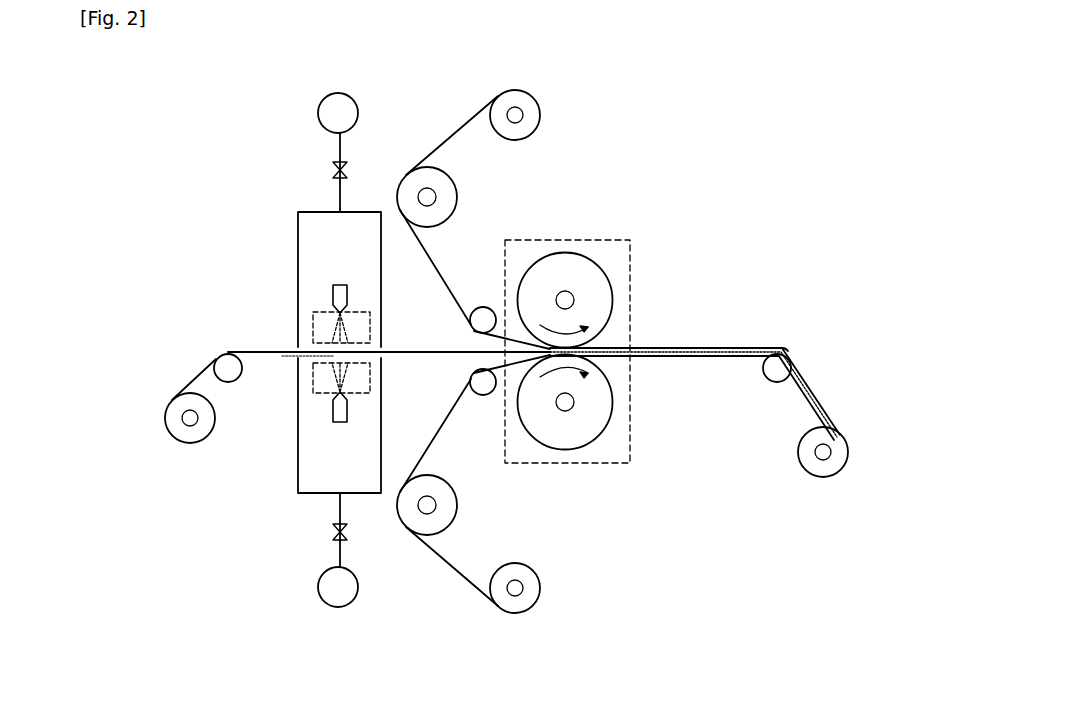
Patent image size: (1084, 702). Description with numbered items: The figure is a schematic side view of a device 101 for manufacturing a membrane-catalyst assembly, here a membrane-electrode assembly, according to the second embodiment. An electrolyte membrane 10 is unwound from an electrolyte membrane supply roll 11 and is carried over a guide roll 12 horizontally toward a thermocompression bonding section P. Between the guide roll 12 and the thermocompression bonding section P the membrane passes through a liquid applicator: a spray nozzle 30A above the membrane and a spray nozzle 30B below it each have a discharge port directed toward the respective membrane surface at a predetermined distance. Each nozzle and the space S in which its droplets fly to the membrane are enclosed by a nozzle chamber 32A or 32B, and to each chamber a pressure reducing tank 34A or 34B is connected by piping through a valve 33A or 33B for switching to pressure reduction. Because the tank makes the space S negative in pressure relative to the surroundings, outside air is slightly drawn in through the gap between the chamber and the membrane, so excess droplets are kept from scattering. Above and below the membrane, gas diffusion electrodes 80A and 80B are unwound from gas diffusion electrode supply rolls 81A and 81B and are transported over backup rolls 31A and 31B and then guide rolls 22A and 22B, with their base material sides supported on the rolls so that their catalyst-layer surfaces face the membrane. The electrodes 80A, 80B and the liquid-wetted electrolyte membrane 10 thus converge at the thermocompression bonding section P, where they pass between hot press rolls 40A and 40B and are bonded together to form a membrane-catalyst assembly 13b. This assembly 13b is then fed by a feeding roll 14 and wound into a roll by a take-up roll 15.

The device for manufacturing membrane-catalyst assembly 101 is at (702, 96).
The electrolyte membrane 10 is at (256, 351).
The electrolyte membrane supply roll 11 is at (165, 415).
The guide roll 12 is at (238, 383).
The membrane-catalyst assembly 13b is at (752, 347).
The feeding roll 14 is at (772, 383).
The take-up roll 15 is at (850, 452).
The guide roll 22A is at (485, 306).
The guide roll 22B is at (485, 398).
The spray nozzle 30A is at (342, 281).
The spray nozzle 30B is at (341, 425).
The backup roll 31A is at (458, 203).
The backup roll 31B is at (458, 516).
The nozzle chamber 32A is at (298, 222).
The nozzle chamber 32B is at (298, 483).
The valve 33A is at (333, 171).
The valve 33B is at (333, 532).
The pressure reducing tank 34A is at (318, 113).
The pressure reducing tank 34B is at (318, 594).
The hot press roll 40A is at (565, 253).
The hot press roll 40B is at (565, 463).
The gas diffusion electrode 80A is at (456, 128).
The gas diffusion electrode 80B is at (455, 570).
The gas diffusion electrode supply roll 81A is at (534, 95).
The gas diffusion electrode supply roll 81B is at (534, 611).
The thermocompression bonding section P is at (603, 240).
The space S is at (372, 326).